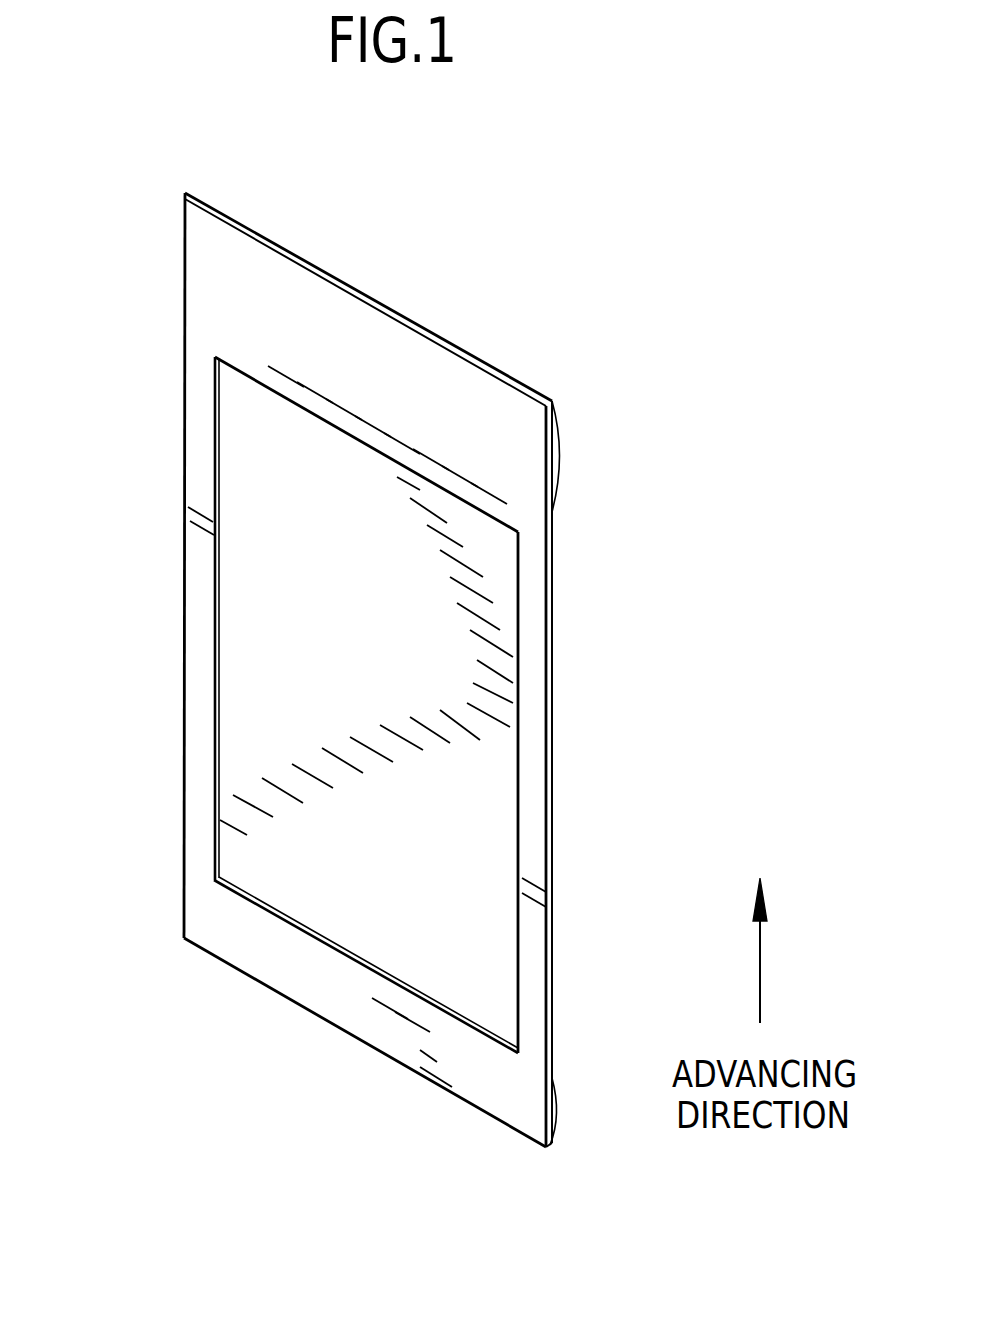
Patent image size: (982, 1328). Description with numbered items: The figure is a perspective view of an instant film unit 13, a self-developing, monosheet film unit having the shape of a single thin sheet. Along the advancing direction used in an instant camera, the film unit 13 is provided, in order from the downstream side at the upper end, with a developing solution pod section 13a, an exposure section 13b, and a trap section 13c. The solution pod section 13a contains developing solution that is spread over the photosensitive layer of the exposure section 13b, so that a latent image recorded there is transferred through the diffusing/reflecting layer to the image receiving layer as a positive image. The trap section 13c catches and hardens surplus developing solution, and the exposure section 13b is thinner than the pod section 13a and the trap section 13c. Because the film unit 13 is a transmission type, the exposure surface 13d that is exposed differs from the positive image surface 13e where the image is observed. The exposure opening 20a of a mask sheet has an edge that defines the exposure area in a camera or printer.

The film unit 13 is at (397, 720).
The developing solution pod section 13a is at (233, 295).
The exposure section 13b is at (366, 705).
The trap section 13c is at (297, 968).
The exposure surface 13d is at (253, 683).
The positive image surface 13e is at (552, 743).
The exposure opening 20a is at (518, 855).